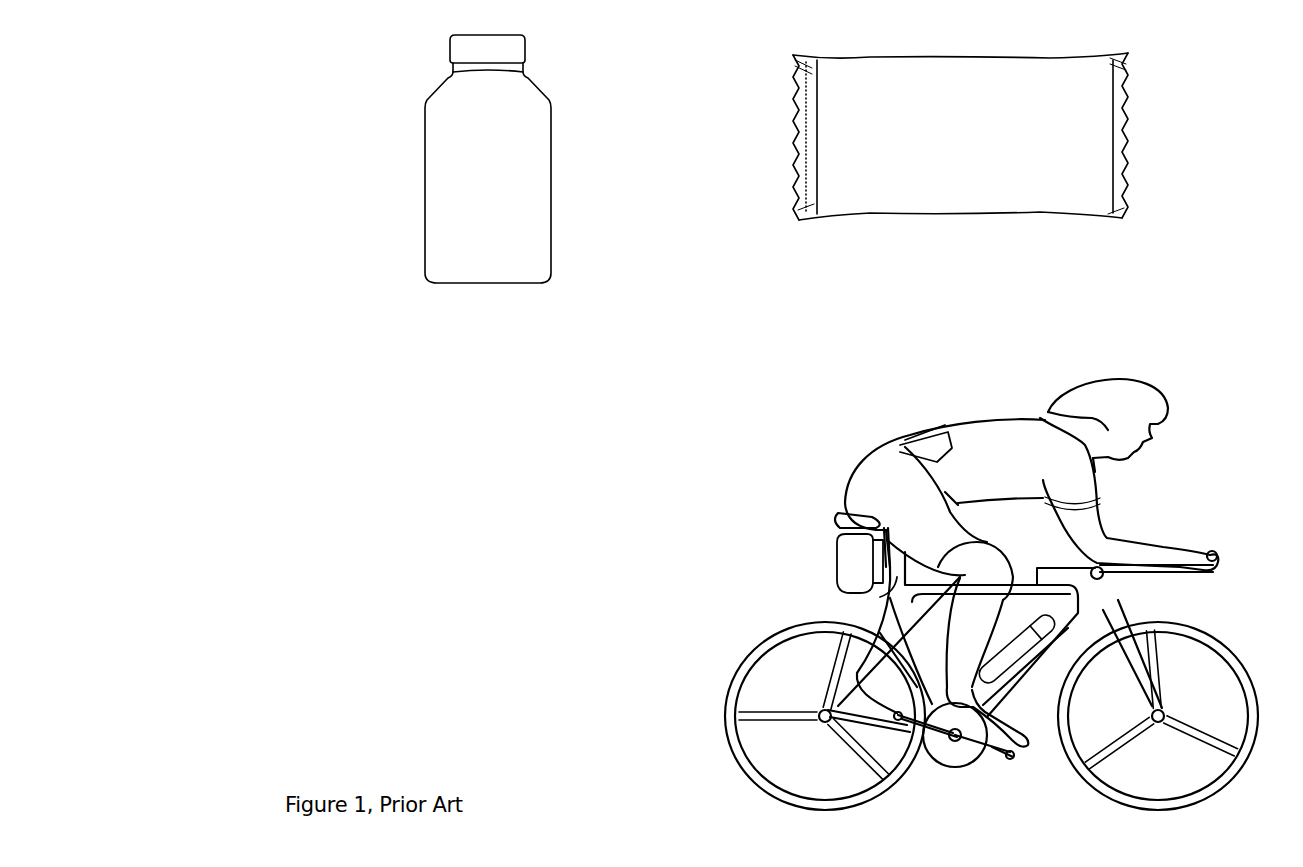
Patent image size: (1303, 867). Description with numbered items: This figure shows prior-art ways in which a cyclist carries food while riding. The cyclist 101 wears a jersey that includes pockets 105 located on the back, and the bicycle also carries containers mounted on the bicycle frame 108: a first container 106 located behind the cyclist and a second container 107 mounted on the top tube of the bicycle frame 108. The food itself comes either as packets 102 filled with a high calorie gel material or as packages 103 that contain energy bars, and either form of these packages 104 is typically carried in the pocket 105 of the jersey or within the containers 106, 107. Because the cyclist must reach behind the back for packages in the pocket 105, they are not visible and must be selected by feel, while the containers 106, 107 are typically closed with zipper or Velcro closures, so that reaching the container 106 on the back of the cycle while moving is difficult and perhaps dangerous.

The cyclist 101 is at (1025, 440).
The packets 102 is at (510, 268).
The packages 103 is at (797, 177).
The packages 104 is at (942, 430).
The pockets 105 is at (900, 443).
The first container 106 is at (850, 557).
The second container 107 is at (1068, 574).
The bicycle frame 108 is at (1035, 672).